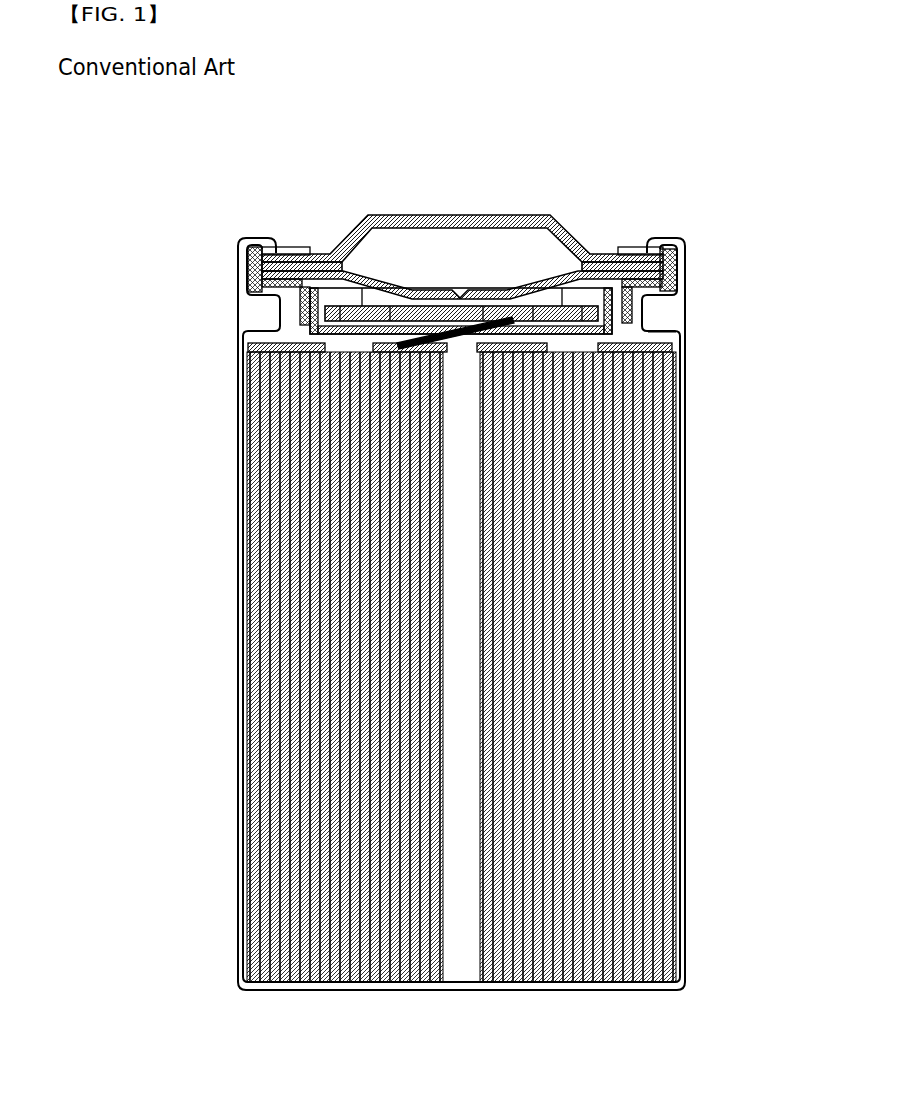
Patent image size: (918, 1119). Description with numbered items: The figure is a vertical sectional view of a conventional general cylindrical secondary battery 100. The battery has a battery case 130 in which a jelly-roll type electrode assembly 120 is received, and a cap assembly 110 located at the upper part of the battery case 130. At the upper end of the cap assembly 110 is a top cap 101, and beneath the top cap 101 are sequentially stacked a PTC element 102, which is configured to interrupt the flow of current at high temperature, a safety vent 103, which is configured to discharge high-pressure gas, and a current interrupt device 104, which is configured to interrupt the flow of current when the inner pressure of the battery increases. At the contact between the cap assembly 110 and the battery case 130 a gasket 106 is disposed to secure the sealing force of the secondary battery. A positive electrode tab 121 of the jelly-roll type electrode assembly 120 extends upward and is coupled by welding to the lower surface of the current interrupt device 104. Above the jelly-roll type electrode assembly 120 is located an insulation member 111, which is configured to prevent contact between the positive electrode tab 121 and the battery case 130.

The cylindrical secondary battery 100 is at (262, 147).
The top cap 101 is at (686, 247).
The PTC element 102 is at (686, 268).
The safety vent 103 is at (686, 290).
The current interrupt device 104 is at (640, 310).
The gasket 106 is at (237, 287).
The cap assembly 110 is at (561, 263).
The insulation member 111 is at (686, 333).
The jelly-roll type electrode assembly 120 is at (686, 585).
The positive electrode tab 121 is at (455, 292).
The battery case 130 is at (686, 410).